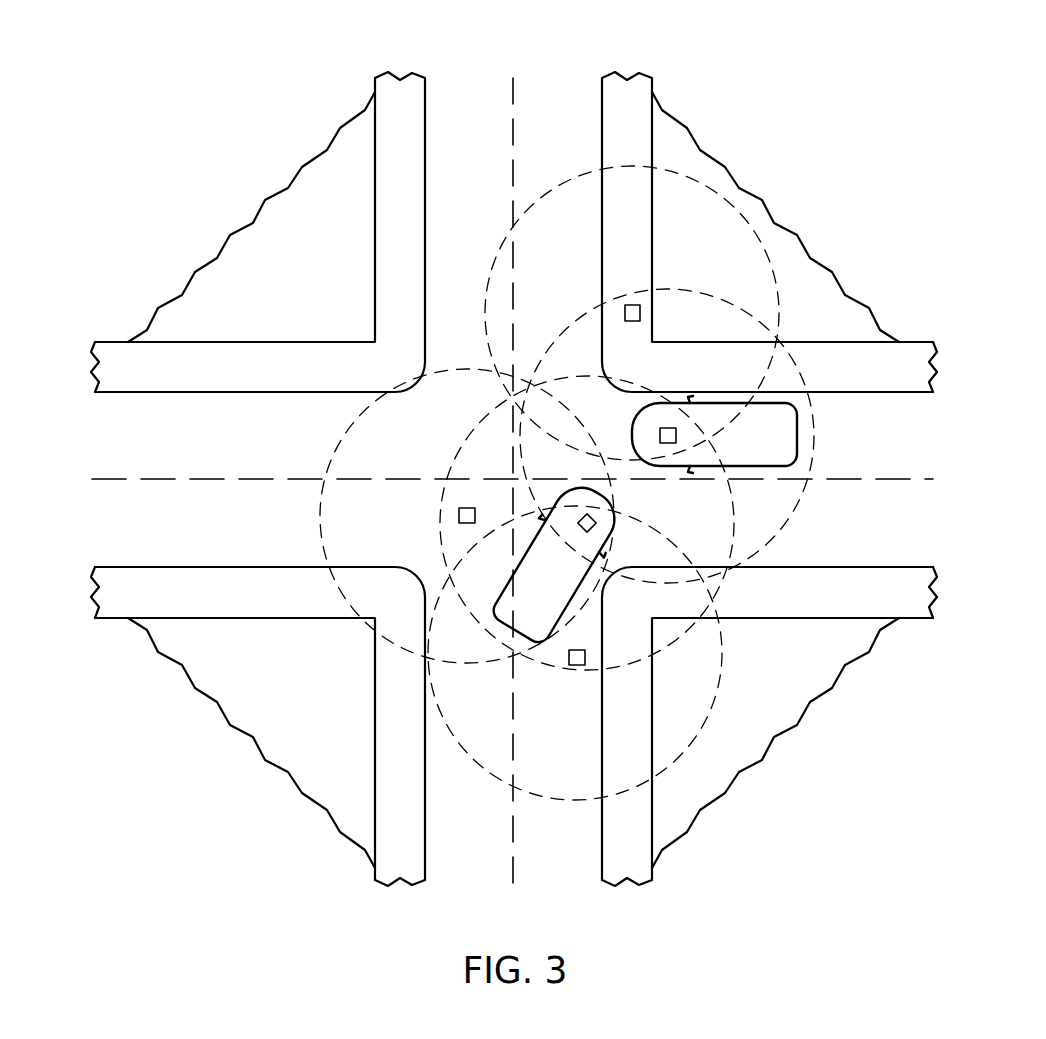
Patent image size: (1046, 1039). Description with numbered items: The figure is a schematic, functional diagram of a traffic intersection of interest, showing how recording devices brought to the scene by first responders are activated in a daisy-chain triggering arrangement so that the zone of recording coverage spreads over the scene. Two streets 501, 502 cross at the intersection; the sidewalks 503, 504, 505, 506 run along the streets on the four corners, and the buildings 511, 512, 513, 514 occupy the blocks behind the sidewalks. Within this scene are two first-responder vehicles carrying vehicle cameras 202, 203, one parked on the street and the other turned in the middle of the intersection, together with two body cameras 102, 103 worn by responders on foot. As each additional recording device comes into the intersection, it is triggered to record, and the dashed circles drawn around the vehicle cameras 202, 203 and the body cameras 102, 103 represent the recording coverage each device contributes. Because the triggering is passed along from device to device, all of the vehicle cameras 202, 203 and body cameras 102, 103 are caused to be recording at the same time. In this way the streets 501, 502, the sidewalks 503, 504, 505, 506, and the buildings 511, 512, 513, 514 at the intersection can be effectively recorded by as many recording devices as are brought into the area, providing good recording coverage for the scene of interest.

The body camera 102 is at (459, 514).
The body camera 103 is at (577, 665).
The vehicle camera 202 is at (660, 434).
The vehicle camera 203 is at (598, 522).
The street 501 is at (463, 90).
The street 502 is at (873, 549).
The sidewalk 503 is at (889, 380).
The sidewalk 504 is at (186, 380).
The sidewalk 505 is at (186, 606).
The sidewalk 506 is at (801, 608).
The building 511 is at (686, 271).
The building 512 is at (745, 711).
The building 513 is at (279, 711).
The building 514 is at (278, 298).